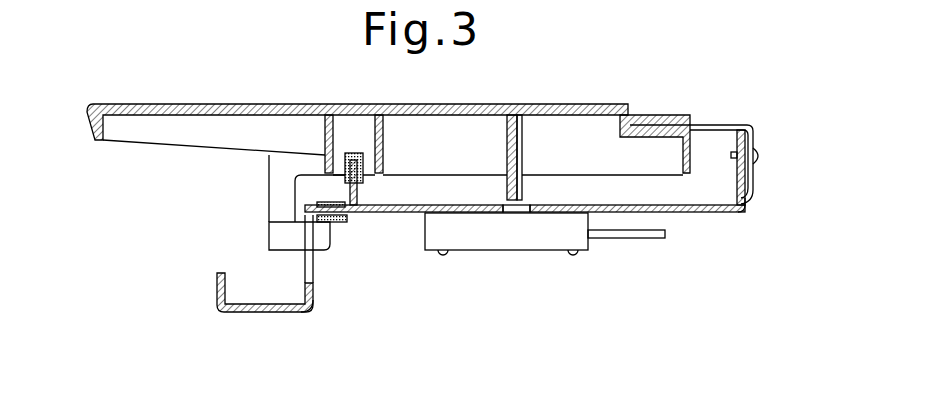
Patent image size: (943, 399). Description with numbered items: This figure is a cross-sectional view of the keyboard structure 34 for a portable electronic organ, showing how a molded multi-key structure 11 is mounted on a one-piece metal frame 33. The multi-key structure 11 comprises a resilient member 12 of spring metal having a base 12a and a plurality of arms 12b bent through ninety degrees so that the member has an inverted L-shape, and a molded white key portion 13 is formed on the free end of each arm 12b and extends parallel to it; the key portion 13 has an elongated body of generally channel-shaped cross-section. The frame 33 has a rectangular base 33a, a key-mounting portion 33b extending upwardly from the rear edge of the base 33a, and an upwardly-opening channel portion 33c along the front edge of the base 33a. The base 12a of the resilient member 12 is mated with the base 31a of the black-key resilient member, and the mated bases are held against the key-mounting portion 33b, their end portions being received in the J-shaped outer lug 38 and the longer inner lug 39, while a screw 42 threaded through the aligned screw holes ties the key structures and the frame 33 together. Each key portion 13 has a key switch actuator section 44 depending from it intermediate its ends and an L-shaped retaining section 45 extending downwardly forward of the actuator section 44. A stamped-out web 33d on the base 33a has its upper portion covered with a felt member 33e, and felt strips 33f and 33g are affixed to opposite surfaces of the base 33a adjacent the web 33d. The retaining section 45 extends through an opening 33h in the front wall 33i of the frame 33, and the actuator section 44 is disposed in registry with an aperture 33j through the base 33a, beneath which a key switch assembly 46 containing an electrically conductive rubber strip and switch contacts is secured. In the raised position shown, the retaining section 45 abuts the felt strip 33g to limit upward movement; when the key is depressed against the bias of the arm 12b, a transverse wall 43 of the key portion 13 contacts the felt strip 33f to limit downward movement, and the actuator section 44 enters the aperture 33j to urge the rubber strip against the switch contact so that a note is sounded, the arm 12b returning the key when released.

The multi-key structure 11 is at (573, 104).
The resilient member 12 is at (703, 122).
The base 12a is at (751, 138).
The arm 12b is at (717, 125).
The key portion 13 is at (279, 104).
The base 31a is at (733, 137).
The frame 33 is at (736, 213).
The base 33a is at (676, 213).
The key-mounting portion 33b is at (737, 196).
The channel portion 33c is at (258, 313).
The web 33d is at (363, 194).
The felt member 33e is at (369, 106).
The felt strip 33f is at (295, 188).
The felt strip 33g is at (340, 224).
The opening 33h is at (313, 280).
The front wall 33i is at (313, 309).
The aperture 33j is at (539, 205).
The keyboard structure 34 is at (507, 104).
The outer lug 38 is at (751, 207).
The inner lug 39 is at (757, 197).
The screw 42 is at (761, 153).
The transverse wall 43 is at (334, 135).
The key switch actuator section 44 is at (507, 192).
The retaining section 45 is at (269, 234).
The key switch assembly 46 is at (512, 252).